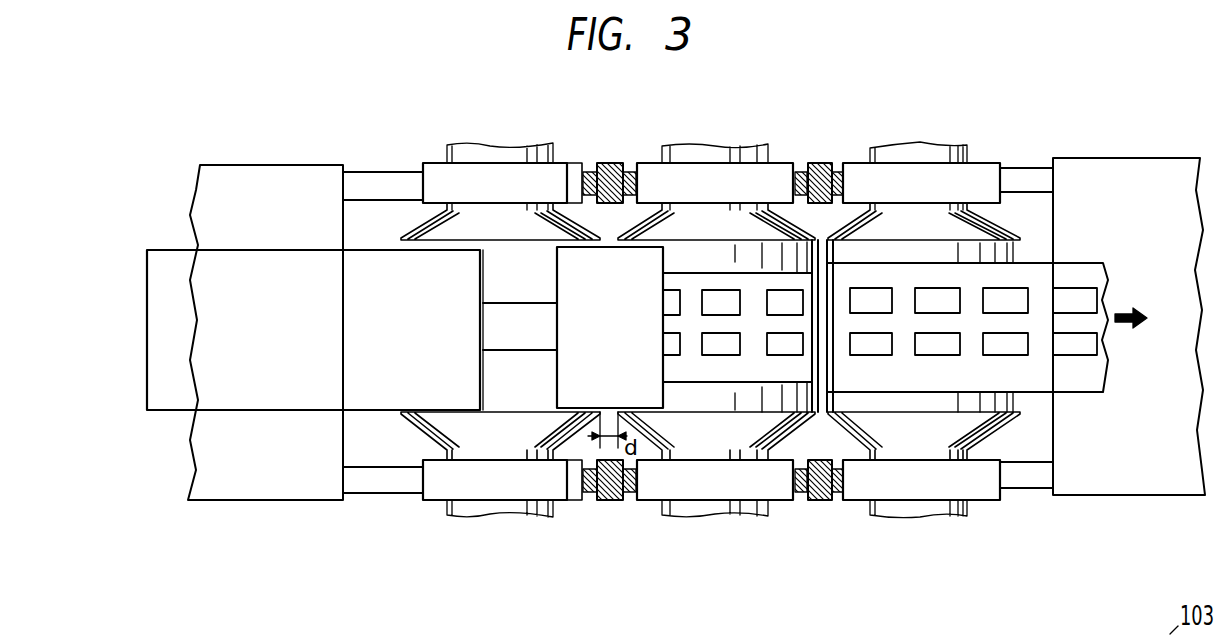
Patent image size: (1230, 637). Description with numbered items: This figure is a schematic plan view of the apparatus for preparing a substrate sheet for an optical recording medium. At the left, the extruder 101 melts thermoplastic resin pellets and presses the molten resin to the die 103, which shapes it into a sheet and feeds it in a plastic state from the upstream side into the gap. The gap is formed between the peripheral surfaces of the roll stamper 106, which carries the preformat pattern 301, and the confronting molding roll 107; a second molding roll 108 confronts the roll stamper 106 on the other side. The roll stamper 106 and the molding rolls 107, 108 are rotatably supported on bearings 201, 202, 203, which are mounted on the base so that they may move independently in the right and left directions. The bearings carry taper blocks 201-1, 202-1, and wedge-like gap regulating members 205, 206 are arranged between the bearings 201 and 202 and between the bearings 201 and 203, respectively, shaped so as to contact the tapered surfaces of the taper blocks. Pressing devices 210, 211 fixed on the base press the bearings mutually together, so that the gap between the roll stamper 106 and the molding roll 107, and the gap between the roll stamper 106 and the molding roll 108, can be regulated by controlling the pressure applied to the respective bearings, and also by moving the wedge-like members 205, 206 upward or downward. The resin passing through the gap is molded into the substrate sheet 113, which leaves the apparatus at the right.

The extruder 101 is at (250, 260).
The die 103 is at (565, 260).
The roll stamper 106 is at (745, 400).
The molding roll 107 is at (517, 410).
The molding roll 108 is at (935, 408).
The substrate sheet 113 is at (1075, 263).
The bearing 201 is at (686, 175).
The taper block 201-1 is at (634, 495).
The bearing 202 is at (473, 172).
The taper block 202-1 is at (590, 500).
The bearing 203 is at (935, 175).
The wedge-like gap regulating member 205 is at (608, 163).
The wedge-like gap regulating member 206 is at (820, 163).
The pressing device 210 is at (290, 487).
The pressing device 211 is at (1135, 495).
The preformat pattern 301 is at (735, 295).